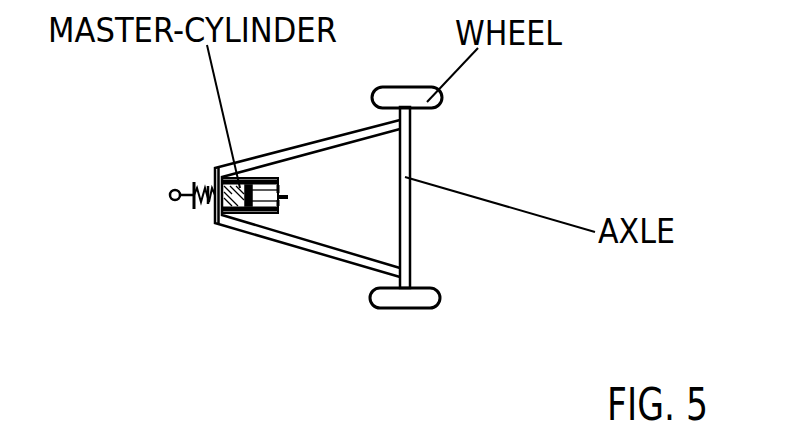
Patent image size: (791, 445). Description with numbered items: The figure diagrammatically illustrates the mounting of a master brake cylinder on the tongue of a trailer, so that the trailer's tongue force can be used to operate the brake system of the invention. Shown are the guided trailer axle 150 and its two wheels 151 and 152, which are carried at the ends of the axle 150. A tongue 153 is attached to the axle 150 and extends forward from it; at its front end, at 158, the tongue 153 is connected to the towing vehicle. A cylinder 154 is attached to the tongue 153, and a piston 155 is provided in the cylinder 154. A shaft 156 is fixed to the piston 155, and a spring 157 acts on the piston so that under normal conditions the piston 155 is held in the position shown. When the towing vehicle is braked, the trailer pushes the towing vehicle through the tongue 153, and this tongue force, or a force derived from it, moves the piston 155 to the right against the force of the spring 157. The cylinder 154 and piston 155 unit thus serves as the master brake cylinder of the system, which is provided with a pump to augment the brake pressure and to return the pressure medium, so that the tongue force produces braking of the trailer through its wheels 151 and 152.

The trailer axle 150 is at (405, 208).
The wheel 151 is at (440, 107).
The wheel 152 is at (412, 303).
The tongue 153 is at (337, 253).
The cylinder 154 is at (265, 200).
The piston 155 is at (233, 205).
The shaft 156 is at (223, 215).
The spring 157 is at (205, 207).
The connection to towing vehicle 158 is at (170, 190).